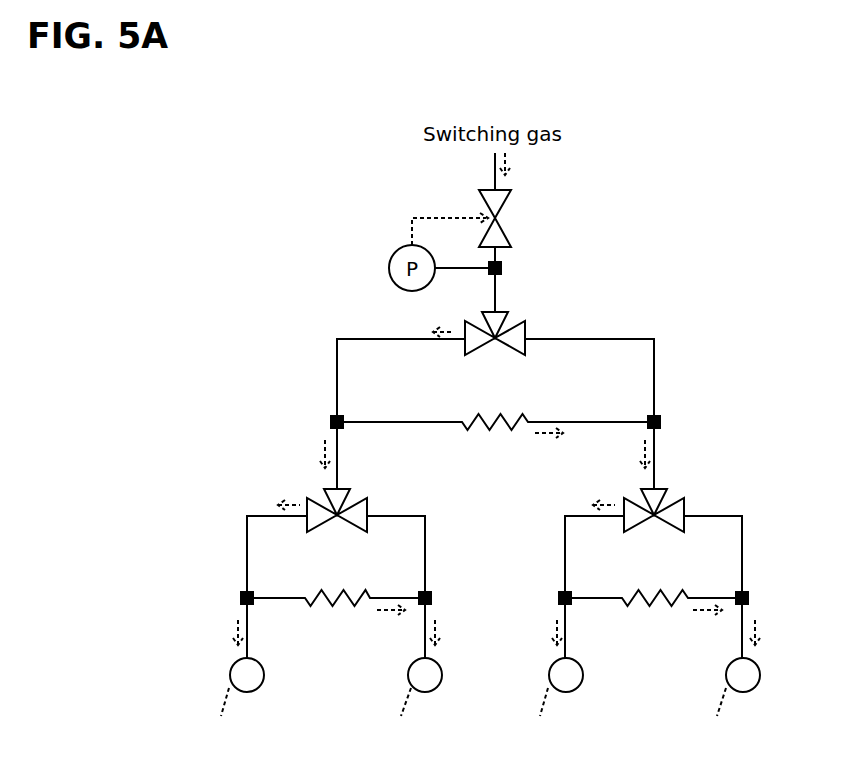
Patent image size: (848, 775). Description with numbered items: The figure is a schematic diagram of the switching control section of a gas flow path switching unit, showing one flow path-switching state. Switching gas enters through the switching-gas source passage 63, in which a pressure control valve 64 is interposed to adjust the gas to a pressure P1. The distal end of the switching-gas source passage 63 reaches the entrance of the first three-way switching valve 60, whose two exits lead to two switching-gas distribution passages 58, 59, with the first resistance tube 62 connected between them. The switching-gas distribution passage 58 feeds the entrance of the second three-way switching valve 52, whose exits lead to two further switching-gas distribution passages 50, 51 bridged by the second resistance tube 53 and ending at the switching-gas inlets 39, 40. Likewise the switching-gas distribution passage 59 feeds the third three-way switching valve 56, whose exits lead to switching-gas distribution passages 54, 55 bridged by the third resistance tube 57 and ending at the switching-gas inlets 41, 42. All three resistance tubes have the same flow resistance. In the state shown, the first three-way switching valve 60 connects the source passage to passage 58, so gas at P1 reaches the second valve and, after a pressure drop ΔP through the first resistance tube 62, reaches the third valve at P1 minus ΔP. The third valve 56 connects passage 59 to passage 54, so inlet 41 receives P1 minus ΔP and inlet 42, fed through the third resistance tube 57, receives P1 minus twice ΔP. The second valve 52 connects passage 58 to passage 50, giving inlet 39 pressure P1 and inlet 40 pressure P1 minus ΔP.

The switching-gas inlet 39 is at (259, 688).
The switching-gas inlet 40 is at (437, 688).
The switching-gas inlet 41 is at (578, 688).
The switching-gas inlet 42 is at (755, 688).
The switching-gas distribution passage 50 is at (247, 521).
The switching-gas distribution passage 51 is at (425, 523).
The second three-way switching valve 52 is at (350, 503).
The second resistance tube 53 is at (330, 605).
The switching-gas distribution passage 54 is at (565, 521).
The switching-gas distribution passage 55 is at (742, 523).
The third three-way switching valve 56 is at (668, 503).
The third resistance tube 57 is at (645, 605).
The switching-gas distribution passage 58 is at (337, 365).
The switching-gas distribution passage 59 is at (654, 360).
The first three-way switching valve 60 is at (523, 331).
The first resistance tube 62 is at (503, 430).
The switching-gas source passage 63 is at (495, 296).
The pressure control valve 64 is at (507, 232).